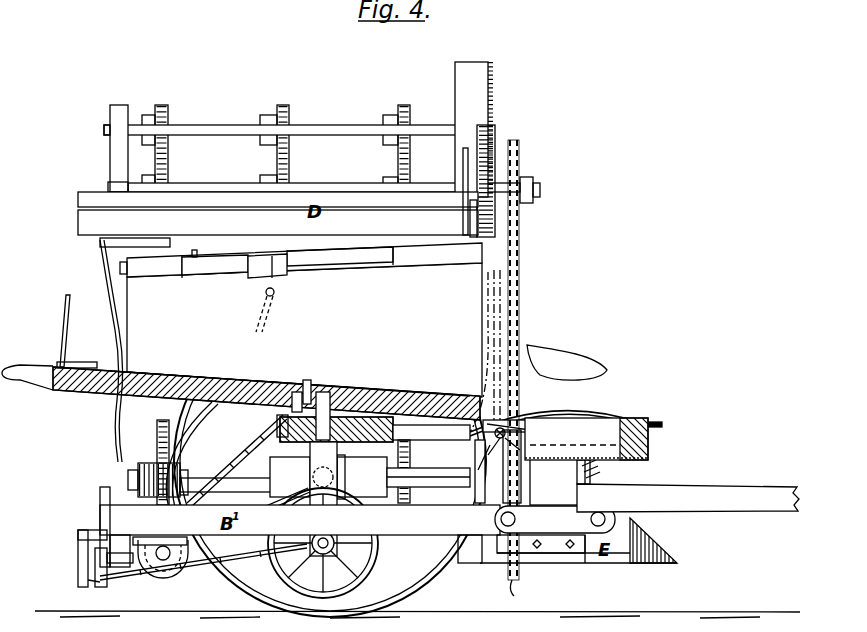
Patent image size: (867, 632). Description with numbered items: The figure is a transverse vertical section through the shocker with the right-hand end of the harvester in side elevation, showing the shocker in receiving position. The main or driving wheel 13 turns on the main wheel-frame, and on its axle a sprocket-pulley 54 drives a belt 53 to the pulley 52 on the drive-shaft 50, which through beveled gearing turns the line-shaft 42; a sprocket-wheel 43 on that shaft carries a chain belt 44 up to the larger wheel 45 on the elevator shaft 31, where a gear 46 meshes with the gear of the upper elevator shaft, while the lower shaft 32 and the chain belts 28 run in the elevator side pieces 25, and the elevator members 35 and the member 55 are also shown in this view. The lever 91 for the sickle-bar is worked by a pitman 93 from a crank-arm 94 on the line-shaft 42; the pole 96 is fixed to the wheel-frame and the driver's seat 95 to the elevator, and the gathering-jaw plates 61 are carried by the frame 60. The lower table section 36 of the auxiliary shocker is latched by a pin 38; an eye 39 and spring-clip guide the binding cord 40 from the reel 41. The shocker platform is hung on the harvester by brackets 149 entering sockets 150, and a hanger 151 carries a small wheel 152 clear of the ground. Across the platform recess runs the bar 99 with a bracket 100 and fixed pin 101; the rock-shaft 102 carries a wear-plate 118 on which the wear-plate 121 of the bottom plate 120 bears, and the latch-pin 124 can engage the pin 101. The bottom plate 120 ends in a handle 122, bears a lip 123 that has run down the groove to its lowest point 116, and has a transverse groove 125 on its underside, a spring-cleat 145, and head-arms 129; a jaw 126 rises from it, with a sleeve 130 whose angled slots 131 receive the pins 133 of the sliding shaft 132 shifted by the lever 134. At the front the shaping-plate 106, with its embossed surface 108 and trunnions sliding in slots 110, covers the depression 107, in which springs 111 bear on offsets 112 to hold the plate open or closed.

The main or driving wheel 13 is at (445, 575).
The side piece 25 is at (118, 176).
The chain belts 28 is at (170, 190).
The shaft 31 is at (553, 190).
The shaft 32 is at (352, 128).
The toothed rack 35 is at (169, 120).
The lower section of the auxiliary shocker table 36 is at (383, 205).
The pin 38 is at (470, 210).
The eye 39 is at (118, 240).
The binding thread or cord 40 is at (112, 325).
The reel 41 is at (150, 465).
The shaft 42 is at (118, 565).
The sprocket-wheel 43 is at (523, 593).
The chain belt 44 is at (493, 110).
The wheel 45 is at (520, 165).
The gear 46 is at (496, 145).
The drive-shaft 50 is at (165, 562).
The pulley 52 is at (150, 575).
The belt 53 is at (222, 562).
The sprocket-pulley 54 is at (236, 492).
The diagonal strut 55 is at (243, 452).
The frame 60 is at (590, 475).
The vertical plates 61 is at (690, 560).
The lever 91 is at (82, 537).
The pitman 93 is at (95, 560).
The crank-arm 94 is at (95, 585).
The driver's seat 95 is at (567, 362).
The pole 96 is at (688, 498).
The bar 99 is at (375, 404).
The bracket 100 is at (370, 472).
The pin 101 is at (353, 471).
The rock-shaft 102 is at (321, 466).
The plate 106 is at (503, 325).
The depression 107 is at (655, 448).
The embossed surface 108 is at (484, 300).
The slots 110 is at (496, 471).
The springs 111 is at (596, 470).
The offsets 112 is at (488, 459).
The lowest point of groove 116 is at (487, 415).
The wear-plate 118 is at (262, 418).
The bottom plate or board 120 is at (245, 372).
The wear-plate 121 is at (380, 400).
The handle 122 is at (45, 383).
The lip 123 is at (440, 460).
The latch-pin 124 is at (307, 385).
The transverse groove 125 is at (266, 383).
The jaw 126 is at (304, 330).
The upwardly-curved arm 129 is at (65, 312).
The sleeve 130 is at (450, 250).
The angled slot 131 is at (175, 268).
The shaft 132 is at (262, 262).
The pins 133 is at (287, 256).
The shifting lever 134 is at (266, 290).
The spring-cleat 145 is at (75, 390).
The brackets 149 is at (295, 505).
The sockets 150 is at (555, 519).
The hanger 151 is at (325, 499).
The small wheel 152 is at (385, 537).